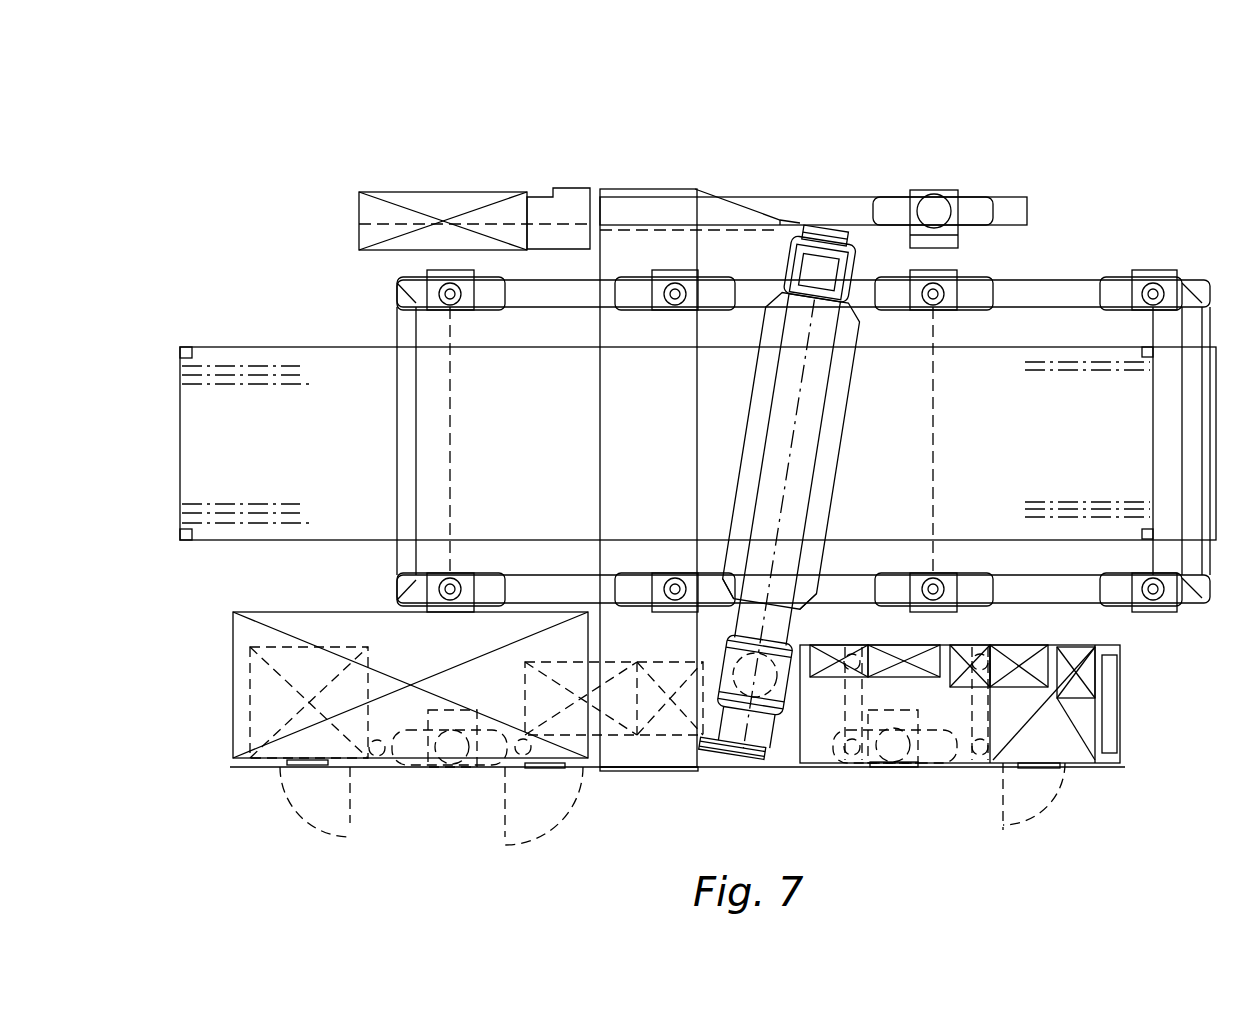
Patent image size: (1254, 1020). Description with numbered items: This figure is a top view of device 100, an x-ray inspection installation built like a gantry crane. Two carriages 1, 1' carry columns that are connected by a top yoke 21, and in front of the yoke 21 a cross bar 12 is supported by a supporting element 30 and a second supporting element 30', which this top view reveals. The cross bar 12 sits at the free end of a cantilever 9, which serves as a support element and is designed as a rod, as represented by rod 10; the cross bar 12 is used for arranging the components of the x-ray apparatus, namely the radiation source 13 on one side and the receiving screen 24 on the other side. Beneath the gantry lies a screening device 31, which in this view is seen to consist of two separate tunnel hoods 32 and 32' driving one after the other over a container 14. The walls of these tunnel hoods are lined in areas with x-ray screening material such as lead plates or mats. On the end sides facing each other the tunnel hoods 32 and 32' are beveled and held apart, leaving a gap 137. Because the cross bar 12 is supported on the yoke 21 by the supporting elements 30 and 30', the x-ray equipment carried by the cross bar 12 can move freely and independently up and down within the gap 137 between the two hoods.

The device 100 is at (385, 170).
The screening device 31 is at (576, 266).
The top yoke 21 is at (640, 247).
The supporting element 30 is at (663, 193).
The carriage 1' is at (813, 192).
The receiving screen 24 is at (852, 268).
The container 14 is at (273, 405).
The tunnel hood 32 is at (635, 441).
The tunnel hood 32' is at (1156, 490).
The cantilever 9 is at (791, 450).
The rod 10 is at (780, 523).
The gap 137 is at (807, 567).
The cross bar 12 is at (752, 617).
The radiation source 13 is at (782, 683).
The carriage 1 is at (754, 786).
The second supporting element 30' is at (705, 801).